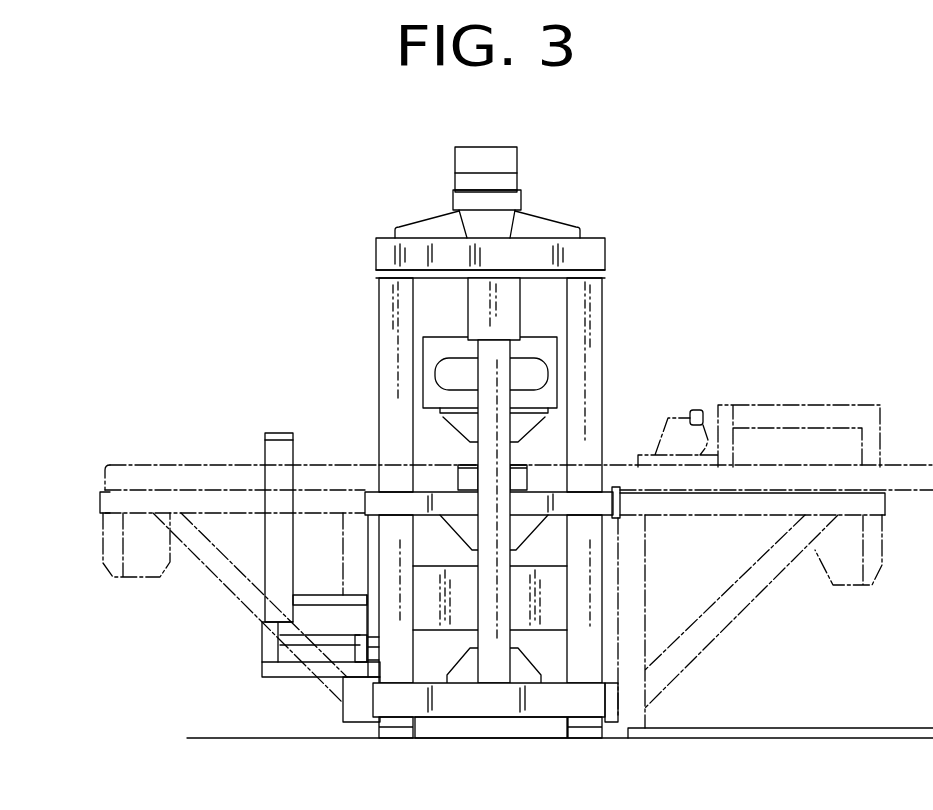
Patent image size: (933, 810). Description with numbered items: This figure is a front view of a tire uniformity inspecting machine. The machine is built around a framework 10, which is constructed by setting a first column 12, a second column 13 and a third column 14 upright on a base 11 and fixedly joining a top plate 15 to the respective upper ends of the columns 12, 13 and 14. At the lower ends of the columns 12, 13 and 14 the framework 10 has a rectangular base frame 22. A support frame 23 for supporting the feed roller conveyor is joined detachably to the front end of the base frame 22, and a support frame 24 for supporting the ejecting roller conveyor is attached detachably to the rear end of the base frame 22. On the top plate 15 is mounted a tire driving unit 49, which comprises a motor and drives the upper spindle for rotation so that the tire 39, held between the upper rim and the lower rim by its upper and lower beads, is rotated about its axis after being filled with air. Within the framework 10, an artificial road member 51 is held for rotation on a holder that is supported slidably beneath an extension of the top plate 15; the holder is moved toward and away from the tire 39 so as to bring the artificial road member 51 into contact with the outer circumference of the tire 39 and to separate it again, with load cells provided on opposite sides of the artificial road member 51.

The framework 10 is at (507, 480).
The base 11 is at (222, 750).
The first column 12 is at (395, 388).
The second column 13 is at (595, 418).
The third column 14 is at (505, 640).
The top plate 15 is at (595, 254).
The rectangular base frame 22 is at (503, 705).
The support frame 23 is at (779, 585).
The support frame 24 is at (228, 607).
The tire 39 is at (548, 376).
The tire driving unit 49 is at (502, 164).
The artificial road member 51 is at (430, 345).